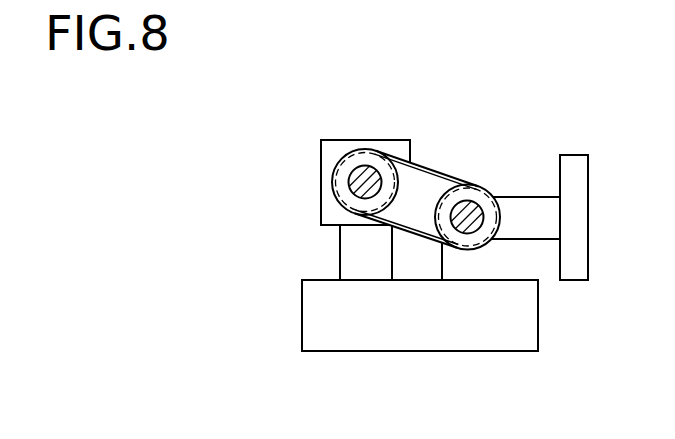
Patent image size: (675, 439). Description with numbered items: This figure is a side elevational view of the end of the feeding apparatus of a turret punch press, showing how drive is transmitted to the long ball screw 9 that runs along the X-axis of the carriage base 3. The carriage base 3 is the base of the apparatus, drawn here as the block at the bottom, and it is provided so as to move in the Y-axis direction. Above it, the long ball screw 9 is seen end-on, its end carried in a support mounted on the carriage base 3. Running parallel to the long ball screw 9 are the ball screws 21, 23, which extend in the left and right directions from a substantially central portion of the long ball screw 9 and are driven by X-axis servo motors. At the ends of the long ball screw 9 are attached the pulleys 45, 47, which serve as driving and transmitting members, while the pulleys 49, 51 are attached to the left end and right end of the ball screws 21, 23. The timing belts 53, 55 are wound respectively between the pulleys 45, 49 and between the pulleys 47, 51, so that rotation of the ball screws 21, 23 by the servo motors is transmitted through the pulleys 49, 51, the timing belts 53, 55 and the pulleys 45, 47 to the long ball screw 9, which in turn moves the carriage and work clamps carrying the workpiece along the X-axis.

The carriage base 3 is at (387, 330).
The long ball screw 9 is at (465, 199).
The ball screw 21 is at (355, 162).
The ball screw 23 is at (350, 148).
The pulley 45 is at (483, 190).
The pulley 47 is at (549, 192).
The pulley 49 is at (333, 183).
The pulley 51 is at (296, 182).
The timing belt 53 is at (422, 167).
The timing belt 55 is at (416, 168).